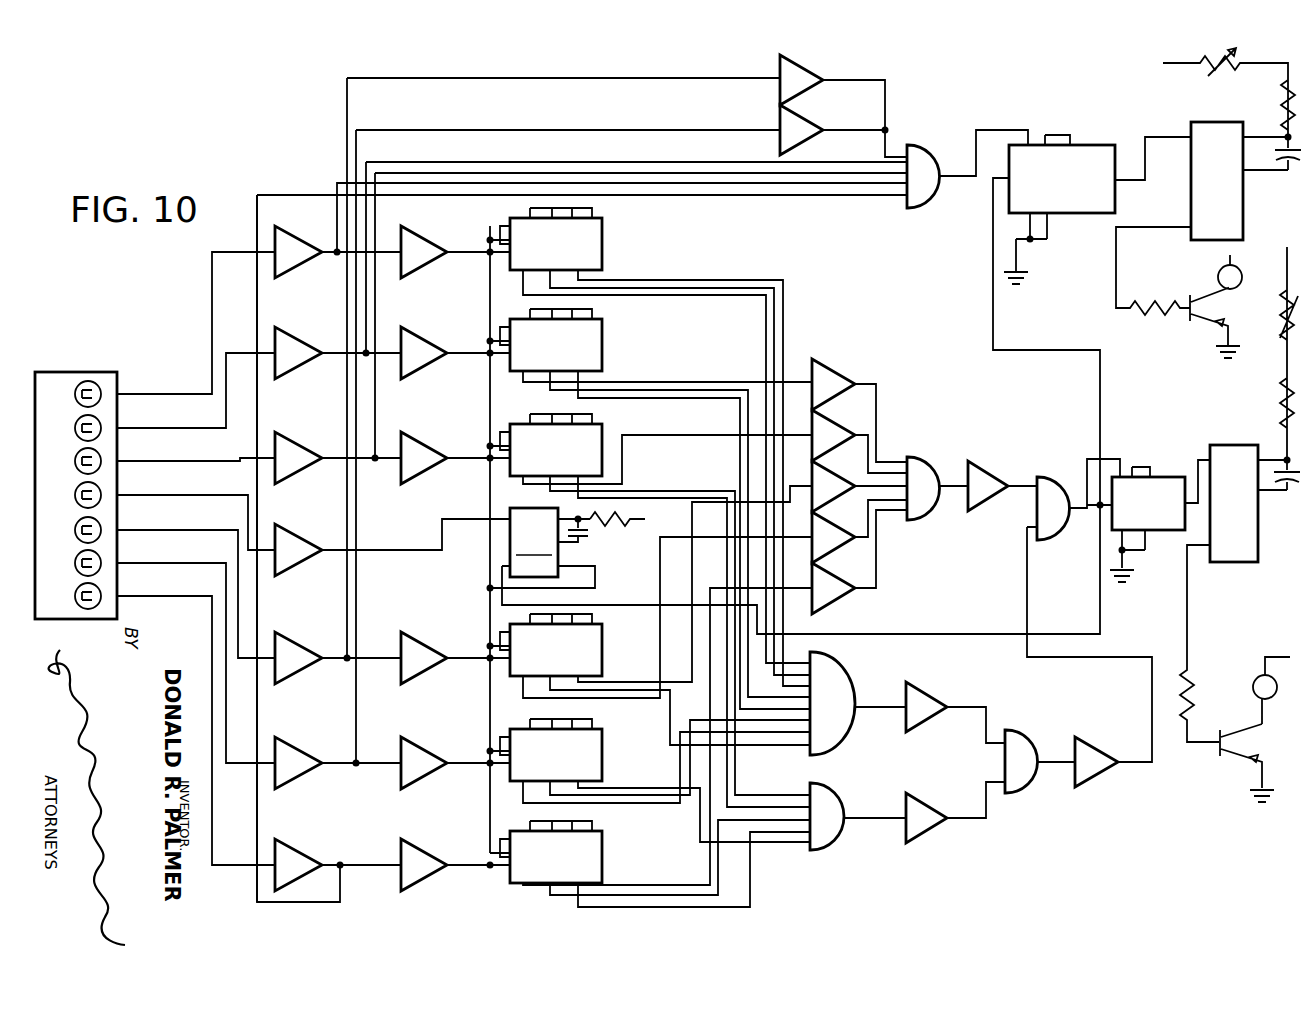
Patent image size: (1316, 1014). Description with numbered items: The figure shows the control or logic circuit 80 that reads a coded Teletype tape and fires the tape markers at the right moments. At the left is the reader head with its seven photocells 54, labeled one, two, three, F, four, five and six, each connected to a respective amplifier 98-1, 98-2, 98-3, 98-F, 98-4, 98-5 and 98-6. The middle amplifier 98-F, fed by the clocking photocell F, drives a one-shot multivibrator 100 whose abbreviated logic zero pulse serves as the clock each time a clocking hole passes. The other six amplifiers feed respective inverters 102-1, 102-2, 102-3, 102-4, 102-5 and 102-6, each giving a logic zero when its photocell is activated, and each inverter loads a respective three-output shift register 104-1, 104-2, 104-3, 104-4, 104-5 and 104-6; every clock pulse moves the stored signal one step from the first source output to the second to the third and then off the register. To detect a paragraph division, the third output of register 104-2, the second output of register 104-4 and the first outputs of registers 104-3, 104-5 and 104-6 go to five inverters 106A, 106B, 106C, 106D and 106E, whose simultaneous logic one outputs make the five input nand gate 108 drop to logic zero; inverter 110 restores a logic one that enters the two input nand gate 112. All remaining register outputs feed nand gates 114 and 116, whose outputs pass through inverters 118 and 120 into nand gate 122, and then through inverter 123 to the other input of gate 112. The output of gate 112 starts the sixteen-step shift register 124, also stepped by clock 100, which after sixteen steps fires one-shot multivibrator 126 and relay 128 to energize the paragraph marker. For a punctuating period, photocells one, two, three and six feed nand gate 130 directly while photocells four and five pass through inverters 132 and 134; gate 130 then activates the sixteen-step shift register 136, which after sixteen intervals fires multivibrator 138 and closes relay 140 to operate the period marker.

The photocell 54 is at (91, 380).
The control circuit 80 is at (285, 153).
The amplifier 98-1 is at (298, 262).
The amplifier 98-2 is at (298, 363).
The amplifier 98-3 is at (298, 468).
The middle amplifier 98-F is at (298, 560).
The amplifier 98-4 is at (298, 668).
The amplifier 98-5 is at (298, 773).
The amplifier 98-6 is at (322, 864).
The one-shot multivibrator 100 is at (534, 542).
The inverter 102-1 is at (420, 244).
The inverter 102-2 is at (420, 345).
The inverter 102-3 is at (420, 450).
The inverter 102-4 is at (420, 642).
The inverter 102-5 is at (420, 748).
The inverter 102-6 is at (420, 850).
The shift register 104-1 is at (602, 246).
The shift register 104-2 is at (602, 347).
The shift register 104-3 is at (600, 430).
The shift register 104-4 is at (602, 642).
The shift register 104-5 is at (624, 754).
The shift register 104-6 is at (602, 852).
The inverter 106A is at (826, 364).
The inverter 106B is at (836, 424).
The inverter 106C is at (840, 474).
The inverter 106D is at (842, 545).
The inverter 106E is at (842, 596).
The five input nand gate 108 is at (935, 462).
The inverter 110 is at (986, 465).
The two input nand gate 112 is at (1054, 477).
The nand gate 114 is at (838, 664).
The nand gate 116 is at (832, 792).
The inverter 118 is at (928, 700).
The inverter 120 is at (928, 810).
The nand gate 122 is at (1034, 737).
The inverter 123 is at (1100, 775).
The 16-step shift register 124 is at (1164, 476).
The one-shot multivibrator 126 is at (1233, 445).
The relay 128 is at (1277, 692).
The nand gate 130 is at (924, 152).
The inverter 132 is at (806, 72).
The inverter 134 is at (808, 122).
The 16-step shift register 136 is at (1090, 145).
The multivibrator 138 is at (1243, 213).
The relay 140 is at (1242, 278).